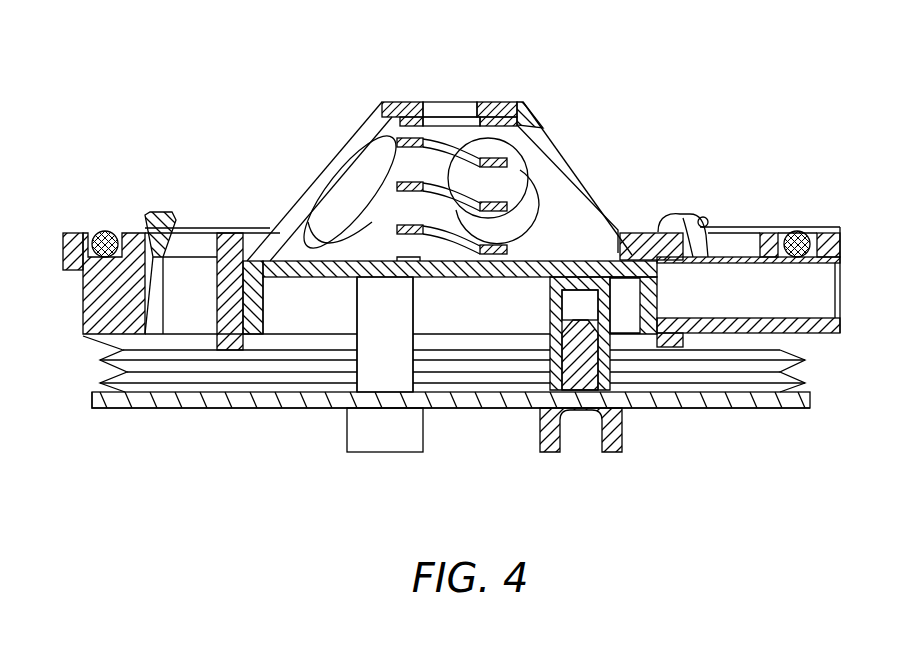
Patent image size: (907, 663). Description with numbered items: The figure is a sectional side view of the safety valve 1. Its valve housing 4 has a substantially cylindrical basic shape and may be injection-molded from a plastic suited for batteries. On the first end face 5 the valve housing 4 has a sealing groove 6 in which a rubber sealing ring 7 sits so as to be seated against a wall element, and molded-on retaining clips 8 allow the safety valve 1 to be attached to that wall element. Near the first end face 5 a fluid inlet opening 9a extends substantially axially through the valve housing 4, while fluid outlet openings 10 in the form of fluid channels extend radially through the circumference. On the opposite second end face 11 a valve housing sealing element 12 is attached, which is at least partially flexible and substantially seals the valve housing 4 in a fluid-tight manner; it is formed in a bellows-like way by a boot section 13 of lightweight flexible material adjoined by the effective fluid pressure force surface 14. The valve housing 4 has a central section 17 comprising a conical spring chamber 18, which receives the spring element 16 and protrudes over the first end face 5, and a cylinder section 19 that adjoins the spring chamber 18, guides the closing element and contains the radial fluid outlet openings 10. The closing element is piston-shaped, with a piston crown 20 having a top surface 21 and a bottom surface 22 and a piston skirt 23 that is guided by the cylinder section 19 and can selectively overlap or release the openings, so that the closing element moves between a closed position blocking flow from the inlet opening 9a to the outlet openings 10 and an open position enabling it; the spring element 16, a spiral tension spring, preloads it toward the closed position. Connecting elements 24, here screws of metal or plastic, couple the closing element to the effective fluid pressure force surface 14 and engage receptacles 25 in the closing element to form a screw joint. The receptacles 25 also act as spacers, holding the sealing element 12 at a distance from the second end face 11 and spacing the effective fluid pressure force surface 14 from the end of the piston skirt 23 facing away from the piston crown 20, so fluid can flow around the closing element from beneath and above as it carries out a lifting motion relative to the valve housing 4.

The safety valve 1 is at (452, 70).
The valve housing 4 is at (380, 101).
The first end face 5 is at (78, 233).
The sealing groove 6 is at (131, 261).
The sealing ring 7 is at (104, 240).
The retaining clips 8 is at (698, 217).
The fluid inlet opening 9a is at (513, 186).
The fluid outlet openings 10 is at (824, 291).
The second end face 11 is at (85, 338).
The valve housing sealing element 12 is at (110, 409).
The boot section 13 is at (128, 373).
The effective fluid pressure force surface 14 is at (100, 409).
The spring element 16 is at (506, 158).
The central section 17 is at (318, 177).
The spring chamber 18 is at (307, 243).
The cylinder section 19 is at (228, 335).
The piston crown 20 is at (450, 373).
The top surface 21 is at (450, 373).
The bottom surface 22 is at (316, 278).
The piston skirt 23 is at (656, 293).
The connecting elements 24 is at (387, 442).
The receptacles 25 is at (400, 317).